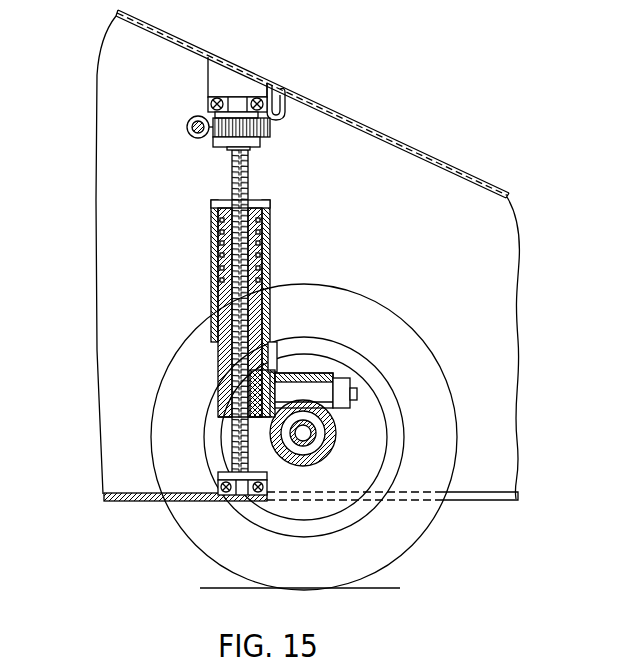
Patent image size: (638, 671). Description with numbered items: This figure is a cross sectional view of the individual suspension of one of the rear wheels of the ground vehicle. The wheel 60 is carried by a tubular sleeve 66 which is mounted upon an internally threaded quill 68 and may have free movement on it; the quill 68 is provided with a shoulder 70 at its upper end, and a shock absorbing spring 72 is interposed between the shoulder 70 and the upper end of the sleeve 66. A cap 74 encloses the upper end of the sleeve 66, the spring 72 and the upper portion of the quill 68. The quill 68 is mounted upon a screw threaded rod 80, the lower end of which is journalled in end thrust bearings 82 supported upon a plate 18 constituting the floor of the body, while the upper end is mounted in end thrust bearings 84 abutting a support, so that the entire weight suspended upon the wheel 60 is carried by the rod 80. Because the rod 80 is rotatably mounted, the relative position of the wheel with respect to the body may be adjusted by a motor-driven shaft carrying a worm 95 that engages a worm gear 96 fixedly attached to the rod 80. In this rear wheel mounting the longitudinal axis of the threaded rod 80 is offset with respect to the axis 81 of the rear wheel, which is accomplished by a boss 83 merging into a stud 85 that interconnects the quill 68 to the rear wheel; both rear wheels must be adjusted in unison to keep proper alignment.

The plate 18 is at (164, 501).
The wheel 60 is at (430, 511).
The tubular sleeve 66 is at (271, 291).
The internally threaded quill 68 is at (231, 258).
The shoulder 70 is at (270, 212).
The shock absorbing spring 72 is at (220, 240).
The cap 74 is at (219, 221).
The screw threaded rod 80 is at (249, 162).
The axis of the rear wheel 81 is at (320, 437).
The end thrust bearings 82 is at (217, 488).
The boss 83 is at (273, 370).
The end thrust bearings 84 is at (208, 103).
The stud 85 is at (309, 387).
The worm 95 is at (187, 127).
The worm gear 96 is at (272, 128).